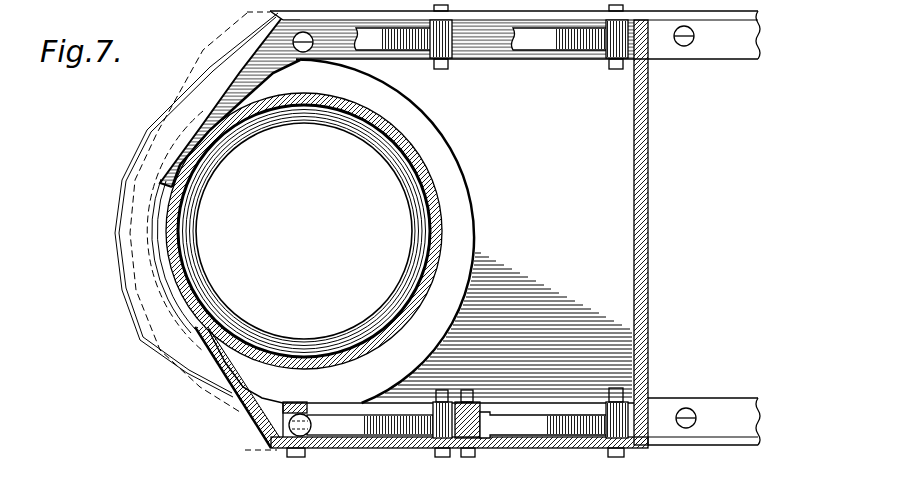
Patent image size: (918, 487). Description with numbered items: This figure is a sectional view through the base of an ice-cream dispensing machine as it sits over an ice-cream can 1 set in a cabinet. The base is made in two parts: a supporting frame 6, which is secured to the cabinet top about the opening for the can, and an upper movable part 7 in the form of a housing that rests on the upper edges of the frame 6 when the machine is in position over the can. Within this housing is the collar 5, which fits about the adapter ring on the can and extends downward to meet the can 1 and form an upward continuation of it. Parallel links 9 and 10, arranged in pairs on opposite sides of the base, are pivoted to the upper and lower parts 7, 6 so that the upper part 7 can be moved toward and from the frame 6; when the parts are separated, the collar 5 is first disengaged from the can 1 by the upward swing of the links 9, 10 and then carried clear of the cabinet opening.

The ice-cream can 1 is at (345, 125).
The collar 5 is at (325, 95).
The supporting frame 6 is at (483, 50).
The upper movable part 7 is at (385, 448).
The parallel link 9 is at (378, 37).
The parallel link 10 is at (537, 35).